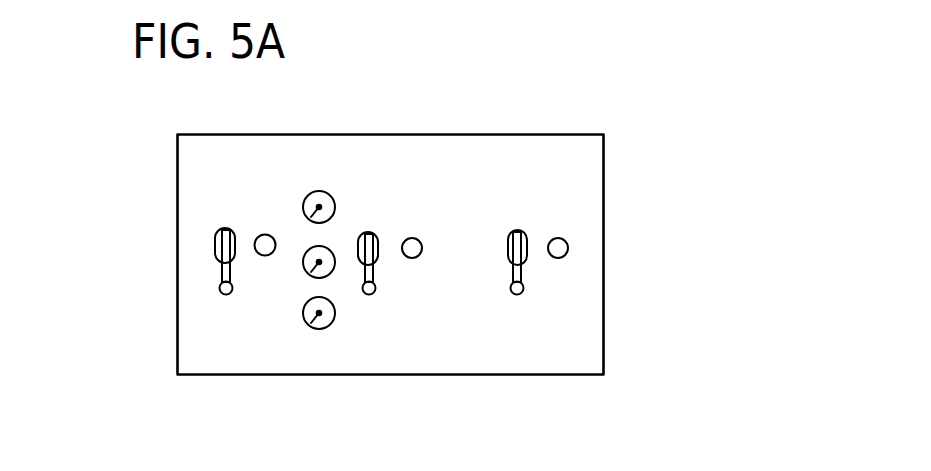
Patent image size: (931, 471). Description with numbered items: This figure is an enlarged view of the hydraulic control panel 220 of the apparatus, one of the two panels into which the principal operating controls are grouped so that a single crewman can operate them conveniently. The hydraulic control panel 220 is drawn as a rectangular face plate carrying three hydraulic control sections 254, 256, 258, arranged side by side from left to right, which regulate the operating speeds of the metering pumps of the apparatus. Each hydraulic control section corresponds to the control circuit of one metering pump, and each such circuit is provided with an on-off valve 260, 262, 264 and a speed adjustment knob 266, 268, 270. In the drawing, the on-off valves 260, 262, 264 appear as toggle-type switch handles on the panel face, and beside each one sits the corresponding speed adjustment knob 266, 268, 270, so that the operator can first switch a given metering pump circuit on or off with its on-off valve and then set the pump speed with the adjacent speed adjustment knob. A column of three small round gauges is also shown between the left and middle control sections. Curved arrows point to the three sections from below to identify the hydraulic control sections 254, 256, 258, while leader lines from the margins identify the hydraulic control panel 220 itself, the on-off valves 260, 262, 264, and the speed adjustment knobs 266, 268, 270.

The hydraulic control panel 220 is at (205, 134).
The hydraulic control section 254 is at (591, 298).
The hydraulic control section 256 is at (342, 257).
The hydraulic control section 258 is at (152, 312).
The on-off valve 260 is at (525, 242).
The on-off valve 262 is at (358, 232).
The on-off valve 264 is at (215, 248).
The speed adjustment knob 266 is at (563, 243).
The speed adjustment knob 268 is at (413, 237).
The speed adjustment knob 270 is at (258, 238).